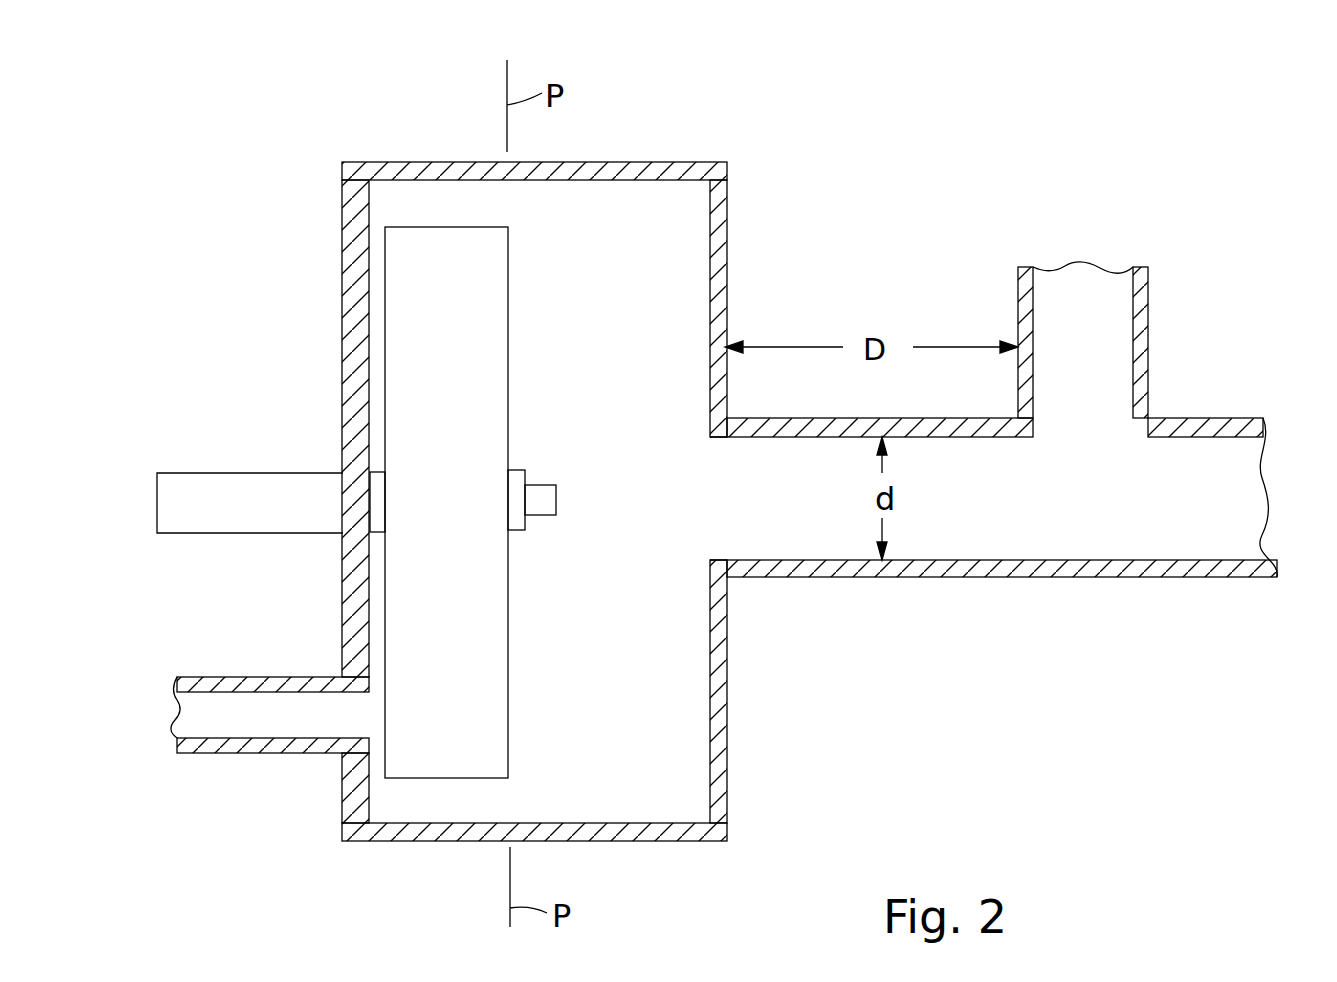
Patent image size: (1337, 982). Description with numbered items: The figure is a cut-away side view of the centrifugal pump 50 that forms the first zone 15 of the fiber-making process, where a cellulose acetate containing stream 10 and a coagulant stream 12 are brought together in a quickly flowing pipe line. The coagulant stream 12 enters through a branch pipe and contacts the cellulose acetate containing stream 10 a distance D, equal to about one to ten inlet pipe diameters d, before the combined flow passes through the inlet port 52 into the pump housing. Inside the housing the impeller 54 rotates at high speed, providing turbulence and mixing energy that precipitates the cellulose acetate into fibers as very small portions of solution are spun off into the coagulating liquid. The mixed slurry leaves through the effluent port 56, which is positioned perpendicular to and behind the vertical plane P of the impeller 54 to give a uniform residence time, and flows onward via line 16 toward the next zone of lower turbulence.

The cellulose acetate containing stream 10 is at (1245, 478).
The coagulant stream 12 is at (1062, 292).
The first zone 15 is at (618, 404).
The line 16 is at (170, 724).
The centrifugal pump 50 is at (740, 197).
The inlet port 52 is at (718, 508).
The impeller 54 is at (480, 265).
The effluent port 56 is at (353, 715).